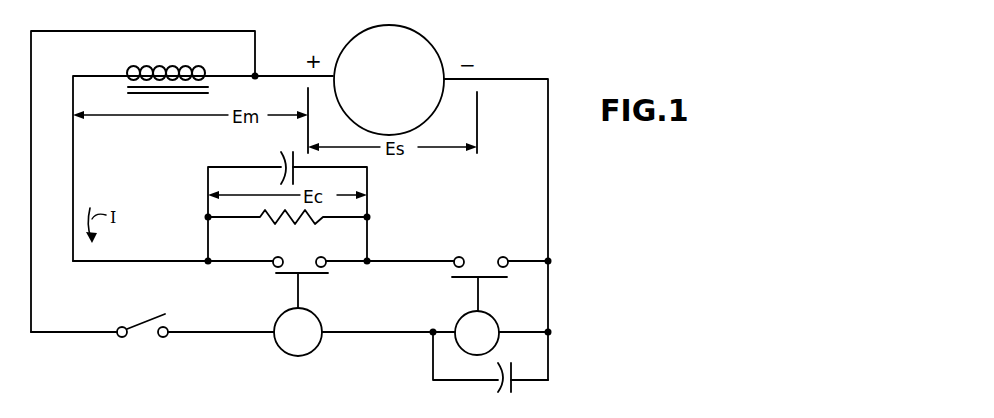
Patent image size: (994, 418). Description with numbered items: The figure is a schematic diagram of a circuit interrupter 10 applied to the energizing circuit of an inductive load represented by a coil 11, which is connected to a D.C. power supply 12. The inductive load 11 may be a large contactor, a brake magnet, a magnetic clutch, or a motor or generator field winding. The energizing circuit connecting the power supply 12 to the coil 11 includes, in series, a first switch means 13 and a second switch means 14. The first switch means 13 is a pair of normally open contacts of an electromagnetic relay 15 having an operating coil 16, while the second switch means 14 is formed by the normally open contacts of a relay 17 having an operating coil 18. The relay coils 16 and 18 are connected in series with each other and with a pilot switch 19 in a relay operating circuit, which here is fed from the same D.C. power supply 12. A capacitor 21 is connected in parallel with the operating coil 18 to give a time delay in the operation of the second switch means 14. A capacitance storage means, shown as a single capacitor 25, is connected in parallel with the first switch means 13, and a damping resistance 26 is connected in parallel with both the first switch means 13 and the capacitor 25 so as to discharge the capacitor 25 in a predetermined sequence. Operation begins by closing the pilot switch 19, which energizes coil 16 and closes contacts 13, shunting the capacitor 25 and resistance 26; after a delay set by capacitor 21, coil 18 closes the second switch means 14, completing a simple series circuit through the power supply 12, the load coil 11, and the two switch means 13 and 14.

The circuit interrupter 10 is at (440, 217).
The coil 11 is at (155, 66).
The D.C. power supply 12 is at (432, 43).
The first switch means 13 is at (330, 272).
The second switch means 14 is at (478, 262).
The electromagnetic relay 15 is at (273, 307).
The operating coil 16 is at (290, 342).
The relay 17 is at (520, 309).
The operating coil 18 is at (470, 340).
The pilot switch 19 is at (143, 333).
The capacitor 21 is at (505, 394).
The capacitor 25 is at (283, 152).
The damping resistance 26 is at (284, 228).